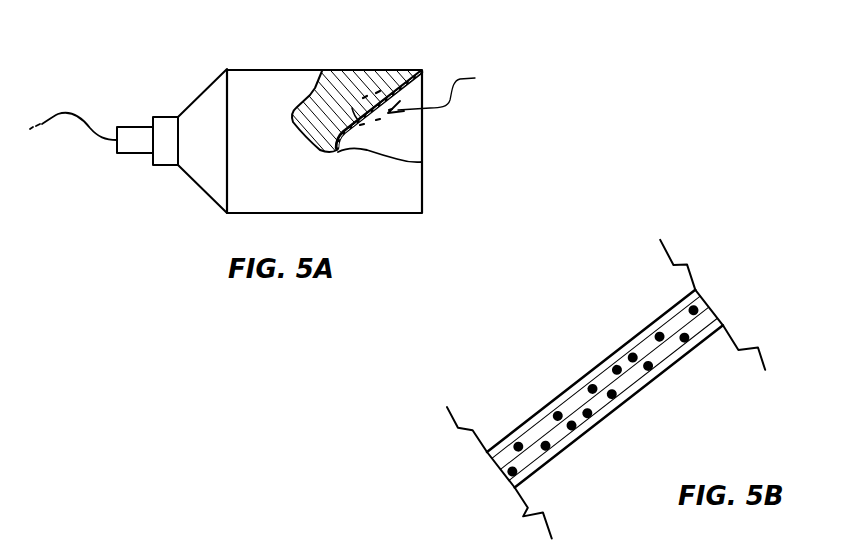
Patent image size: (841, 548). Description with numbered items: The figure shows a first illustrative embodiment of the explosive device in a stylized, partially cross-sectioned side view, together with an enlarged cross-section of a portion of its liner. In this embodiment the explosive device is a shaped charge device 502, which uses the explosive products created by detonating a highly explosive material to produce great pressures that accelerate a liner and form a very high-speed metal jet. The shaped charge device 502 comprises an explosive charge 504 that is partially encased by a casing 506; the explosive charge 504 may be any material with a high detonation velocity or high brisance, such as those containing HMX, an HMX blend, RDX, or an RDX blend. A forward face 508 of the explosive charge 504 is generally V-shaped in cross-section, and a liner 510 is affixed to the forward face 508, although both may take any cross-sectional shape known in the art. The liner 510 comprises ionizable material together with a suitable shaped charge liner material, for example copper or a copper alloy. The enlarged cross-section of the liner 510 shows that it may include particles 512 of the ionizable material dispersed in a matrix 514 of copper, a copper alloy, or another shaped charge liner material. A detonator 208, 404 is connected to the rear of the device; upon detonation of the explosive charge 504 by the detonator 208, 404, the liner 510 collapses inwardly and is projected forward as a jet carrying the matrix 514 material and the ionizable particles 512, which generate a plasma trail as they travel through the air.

In FIG. 5A, the detonator 208 is at (104, 112).
In FIG. 5A, the detonator 404 is at (130, 137).
In FIG. 5A, the shaped charge device 502 is at (301, 159).
In FIG. 5A, the explosive charge 504 is at (345, 82).
In FIG. 5A, the casing 506 is at (405, 188).
In FIG. 5A, the forward face 508 is at (395, 70).
In FIG. 5A, the liner 510 is at (343, 147).
In FIG. 5B, the liner 510 is at (610, 386).
In FIG. 5B, the particles 512 is at (582, 383).
In FIG. 5B, the matrix 514 is at (640, 385).